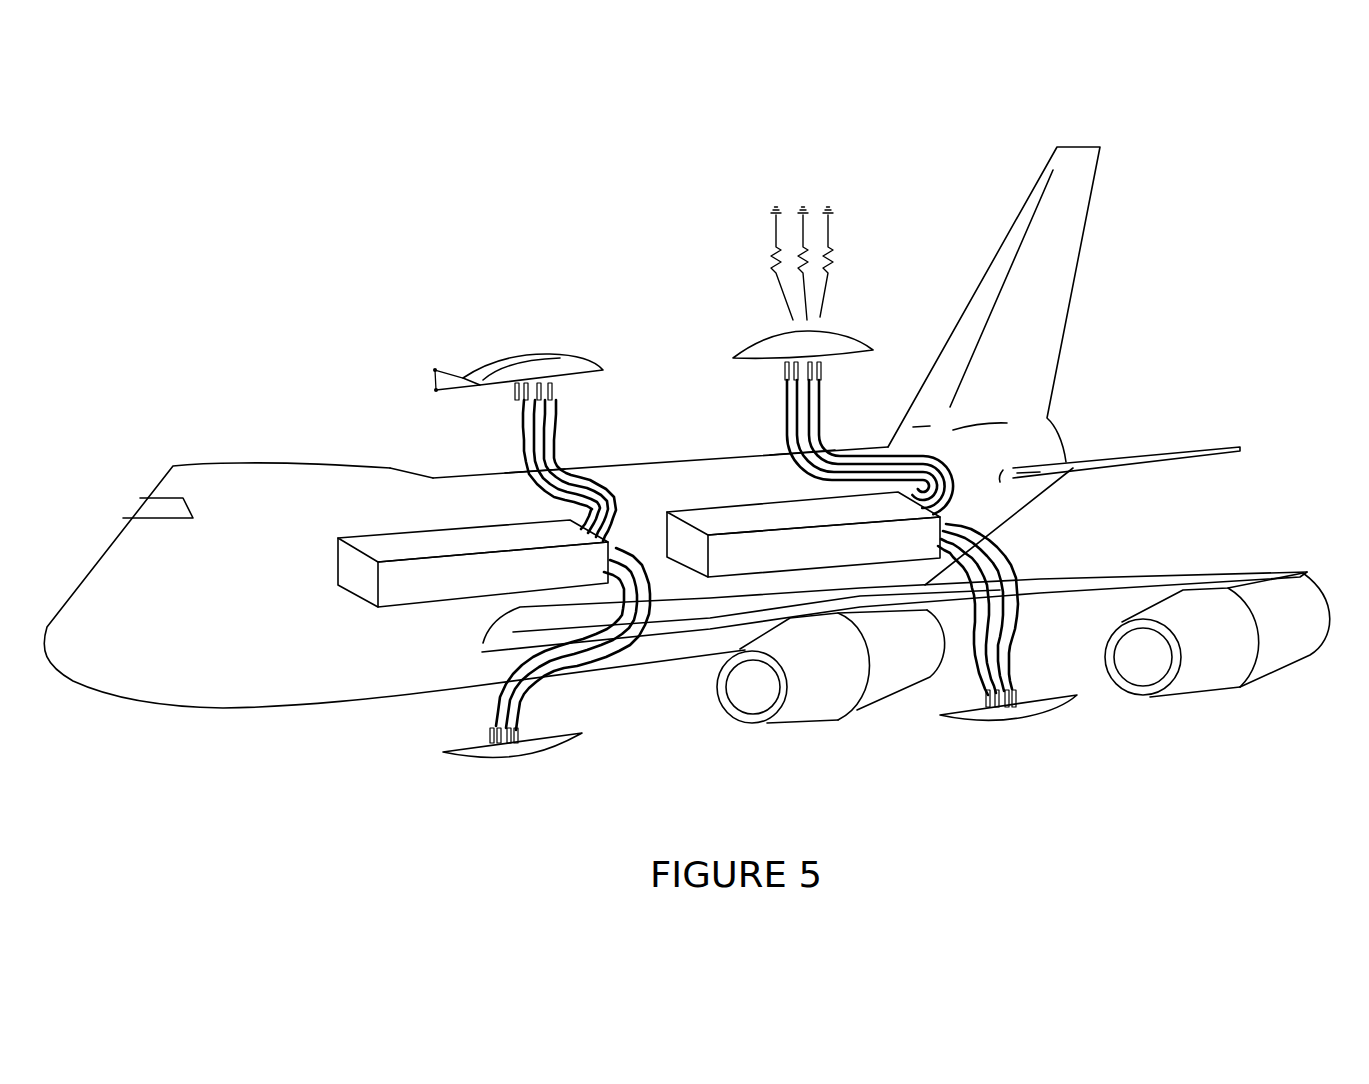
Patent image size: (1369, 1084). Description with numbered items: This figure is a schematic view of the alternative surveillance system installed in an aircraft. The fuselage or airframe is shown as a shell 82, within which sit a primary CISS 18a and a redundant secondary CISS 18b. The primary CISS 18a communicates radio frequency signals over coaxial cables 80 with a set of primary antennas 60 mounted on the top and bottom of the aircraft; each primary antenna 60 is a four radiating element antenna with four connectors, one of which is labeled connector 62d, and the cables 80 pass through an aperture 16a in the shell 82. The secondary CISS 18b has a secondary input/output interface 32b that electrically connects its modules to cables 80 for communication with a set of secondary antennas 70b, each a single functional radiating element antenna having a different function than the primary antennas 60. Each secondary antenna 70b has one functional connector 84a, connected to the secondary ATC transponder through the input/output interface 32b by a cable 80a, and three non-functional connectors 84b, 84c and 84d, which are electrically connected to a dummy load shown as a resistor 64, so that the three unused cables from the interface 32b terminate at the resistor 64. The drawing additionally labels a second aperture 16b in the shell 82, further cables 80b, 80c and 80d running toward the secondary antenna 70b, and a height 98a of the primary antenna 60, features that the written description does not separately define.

The aperture 16a is at (517, 477).
The fuselage aperture for secondary sensor cable 16b is at (797, 458).
The primary CISS 18a is at (350, 593).
The secondary CISS 18b is at (697, 578).
The secondary input/output interface 32b is at (957, 512).
The primary antenna 60 is at (570, 360).
The connector 62d is at (557, 392).
The resistor 64 is at (812, 257).
The secondary antenna 70b is at (853, 340).
The coaxial cable 80 is at (607, 485).
The cable 80a is at (792, 437).
The cable 80b is at (952, 483).
The cable 80c is at (942, 455).
The cable 80d is at (827, 443).
The shell 82 is at (703, 457).
The connector 84a is at (797, 381).
The connector 84b is at (788, 367).
The connector 84c is at (822, 363).
The connector 84d is at (808, 367).
The pod height dimension 98a is at (435, 383).